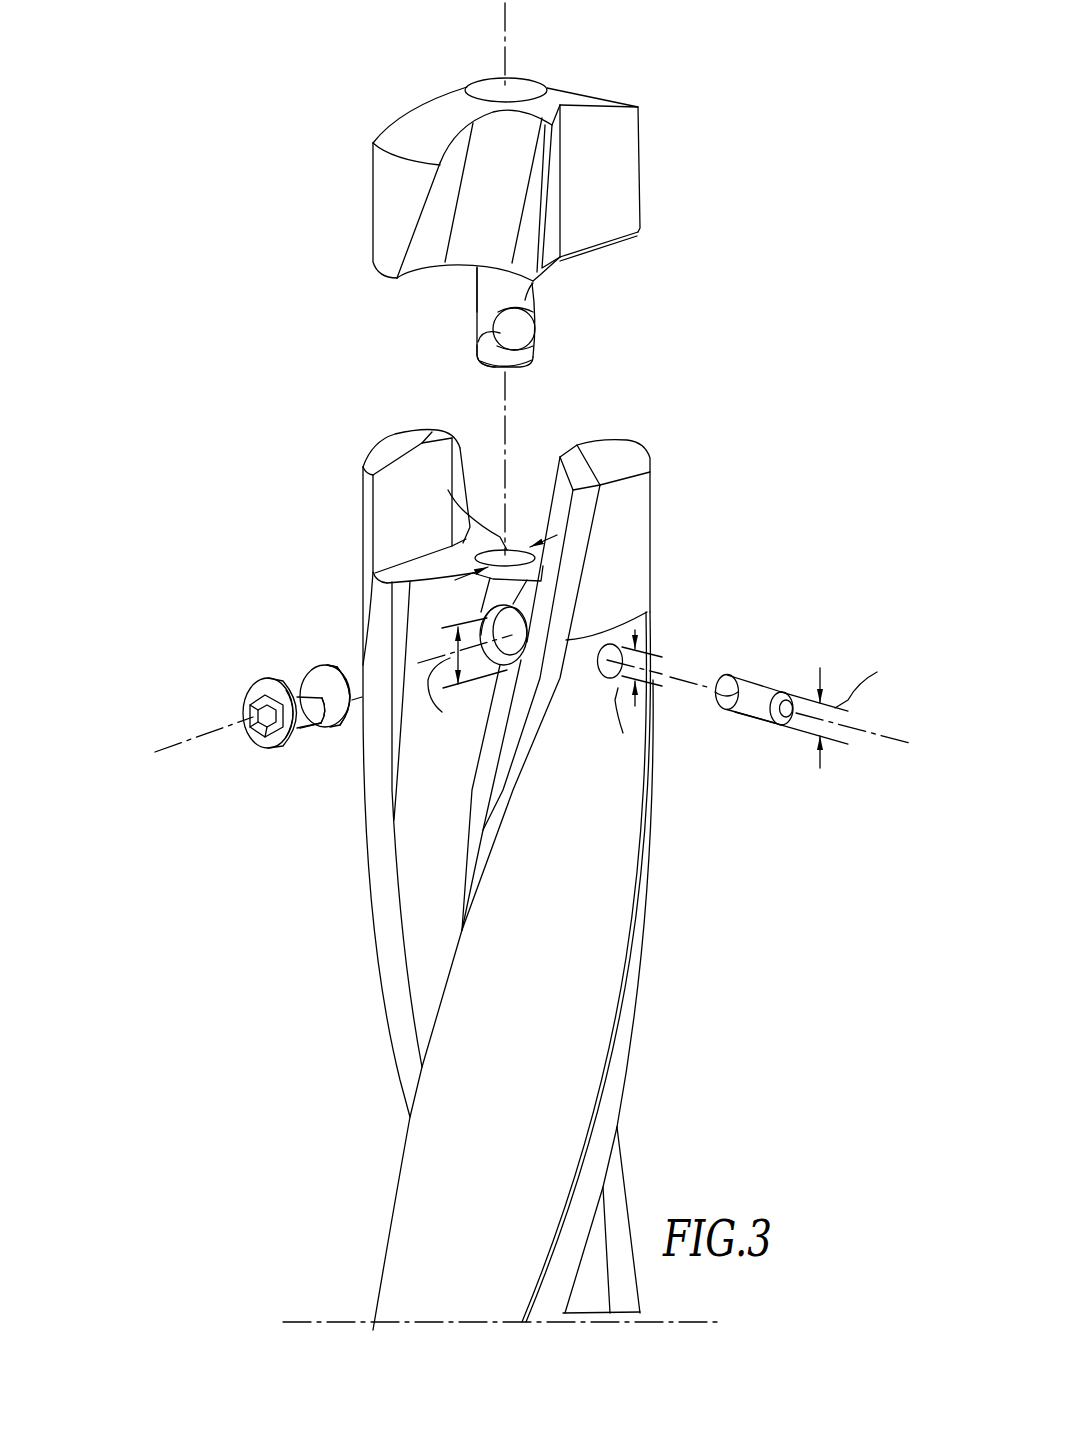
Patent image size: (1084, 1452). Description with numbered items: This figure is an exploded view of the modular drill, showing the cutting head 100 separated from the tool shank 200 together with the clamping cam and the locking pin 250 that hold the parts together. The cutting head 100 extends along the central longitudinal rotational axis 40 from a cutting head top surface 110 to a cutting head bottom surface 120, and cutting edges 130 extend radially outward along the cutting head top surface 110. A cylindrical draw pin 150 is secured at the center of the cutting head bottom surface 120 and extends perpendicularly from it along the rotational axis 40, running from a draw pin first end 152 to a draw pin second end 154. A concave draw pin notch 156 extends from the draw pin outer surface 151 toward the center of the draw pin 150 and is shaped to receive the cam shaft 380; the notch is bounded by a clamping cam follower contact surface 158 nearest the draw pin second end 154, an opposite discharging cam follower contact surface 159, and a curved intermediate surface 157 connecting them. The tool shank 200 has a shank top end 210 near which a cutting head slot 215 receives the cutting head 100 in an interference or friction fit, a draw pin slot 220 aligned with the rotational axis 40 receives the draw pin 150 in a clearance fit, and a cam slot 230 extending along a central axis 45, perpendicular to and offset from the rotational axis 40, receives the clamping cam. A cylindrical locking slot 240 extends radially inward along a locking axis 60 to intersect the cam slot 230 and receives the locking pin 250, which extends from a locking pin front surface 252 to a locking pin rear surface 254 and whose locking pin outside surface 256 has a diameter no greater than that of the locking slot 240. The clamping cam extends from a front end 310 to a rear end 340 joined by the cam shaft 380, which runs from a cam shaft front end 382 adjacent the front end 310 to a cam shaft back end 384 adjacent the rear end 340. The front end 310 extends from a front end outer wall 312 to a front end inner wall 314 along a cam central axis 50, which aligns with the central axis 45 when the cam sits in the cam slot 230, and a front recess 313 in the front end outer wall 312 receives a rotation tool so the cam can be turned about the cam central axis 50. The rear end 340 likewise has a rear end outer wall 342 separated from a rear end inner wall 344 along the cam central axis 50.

The cutting head 100 is at (501, 219).
The cutting head top surface 110 is at (563, 93).
The cutting head bottom surface 120 is at (622, 238).
The cutting edges 130 is at (453, 147).
The draw pin 150 is at (504, 333).
The draw pin outer surface 151 is at (550, 287).
The draw pin first end 152 is at (477, 279).
The draw pin second end 154 is at (477, 355).
The draw pin notch 156 is at (522, 333).
The intermediate surface 157 is at (485, 335).
The clamping cam follower contact surface 158 is at (537, 347).
The discharging cam follower contact surface 159 is at (537, 307).
The rotational axis 40 is at (507, 425).
The tool shank 200 is at (503, 880).
The shank top end 210 is at (650, 610).
The cutting head slot 215 is at (398, 505).
The draw pin slot 220 is at (503, 548).
The cam slot 230 is at (504, 759).
The locking slot 240 is at (607, 681).
The central axis 45 is at (473, 622).
The cam central axis 50 is at (168, 750).
The locking axis 60 is at (680, 670).
The locking pin 250 is at (796, 670).
The locking pin front surface 252 is at (722, 677).
The locking pin rear surface 254 is at (787, 697).
The locking pin outside surface 256 is at (745, 708).
The front end 310 is at (226, 686).
The front end outer wall 312 is at (247, 707).
The front recess 313 is at (263, 720).
The front end inner wall 314 is at (293, 680).
The rear end 340 is at (361, 674).
The rear end outer wall 342 is at (353, 700).
The rear end inner wall 344 is at (340, 712).
The cam shaft 380 is at (291, 690).
The cam shaft front end 382 is at (315, 725).
The cam shaft back end 384 is at (311, 725).